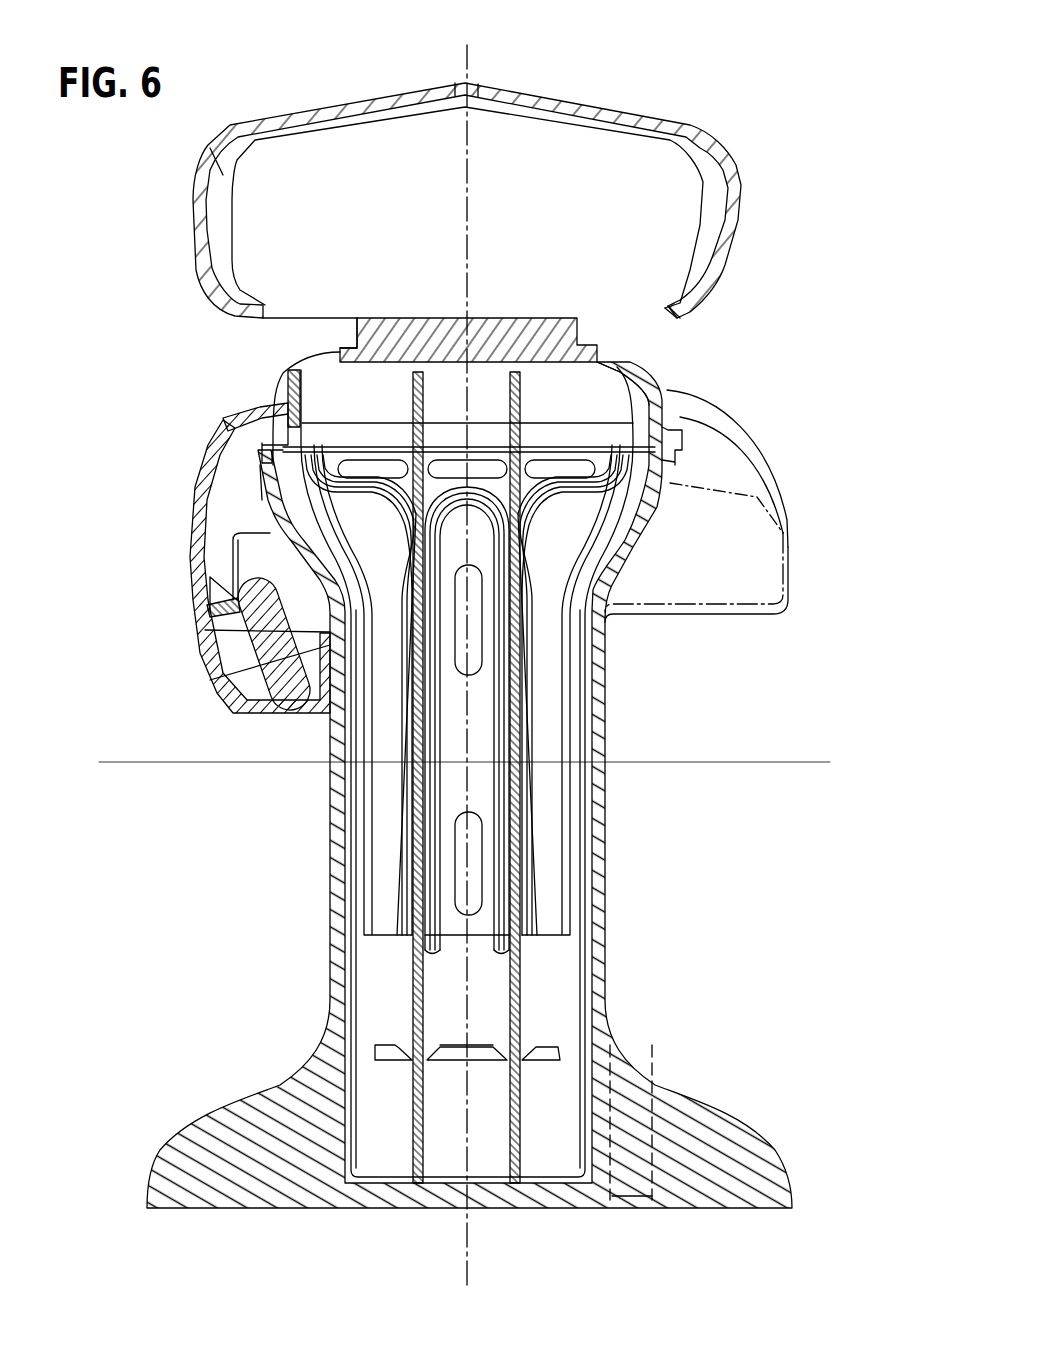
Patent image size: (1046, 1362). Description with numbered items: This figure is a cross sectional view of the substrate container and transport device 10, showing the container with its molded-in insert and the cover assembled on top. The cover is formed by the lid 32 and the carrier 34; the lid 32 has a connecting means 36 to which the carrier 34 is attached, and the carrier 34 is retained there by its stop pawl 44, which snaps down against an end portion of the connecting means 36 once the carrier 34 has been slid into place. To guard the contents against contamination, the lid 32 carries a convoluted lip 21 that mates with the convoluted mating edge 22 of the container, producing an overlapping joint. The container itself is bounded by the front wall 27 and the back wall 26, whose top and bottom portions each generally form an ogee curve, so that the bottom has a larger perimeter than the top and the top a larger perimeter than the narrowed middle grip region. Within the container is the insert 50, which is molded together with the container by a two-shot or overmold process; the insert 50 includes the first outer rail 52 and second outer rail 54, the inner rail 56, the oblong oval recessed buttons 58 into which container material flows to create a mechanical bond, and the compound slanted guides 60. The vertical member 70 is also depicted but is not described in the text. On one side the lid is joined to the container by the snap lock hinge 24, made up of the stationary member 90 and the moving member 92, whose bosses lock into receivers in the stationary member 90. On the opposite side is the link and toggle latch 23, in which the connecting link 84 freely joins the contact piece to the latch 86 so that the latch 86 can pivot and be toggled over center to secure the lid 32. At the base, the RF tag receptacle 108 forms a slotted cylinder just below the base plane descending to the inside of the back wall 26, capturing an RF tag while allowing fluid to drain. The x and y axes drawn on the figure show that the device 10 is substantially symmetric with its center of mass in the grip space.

The substrate container and transport device 10 is at (786, 101).
The carrier 34 is at (725, 180).
The connecting means 36 is at (355, 345).
The stop pawl 44 is at (585, 322).
The lid 32 is at (660, 385).
The vertical bar 70 is at (525, 382).
The convoluted lip 21 is at (262, 416).
The first outer rail 52 is at (324, 450).
The recessed buttons 58 is at (363, 465).
The inner rail 56 is at (448, 490).
The second outer rail 54 is at (600, 448).
The latch 86 is at (200, 480).
The moving member 92 is at (773, 470).
The convoluted mating edge 22 is at (262, 455).
The snap lock hinge 24 is at (812, 520).
The link and toggle latch 23 is at (130, 612).
The connecting link 84 is at (262, 668).
The stationary member 90 is at (695, 616).
The insert 50 is at (469, 818).
The compound slanted guides 60 is at (388, 1043).
The front wall 27 is at (293, 1072).
The back wall 26 is at (640, 1068).
The RF tag receptacle 108 is at (650, 1212).